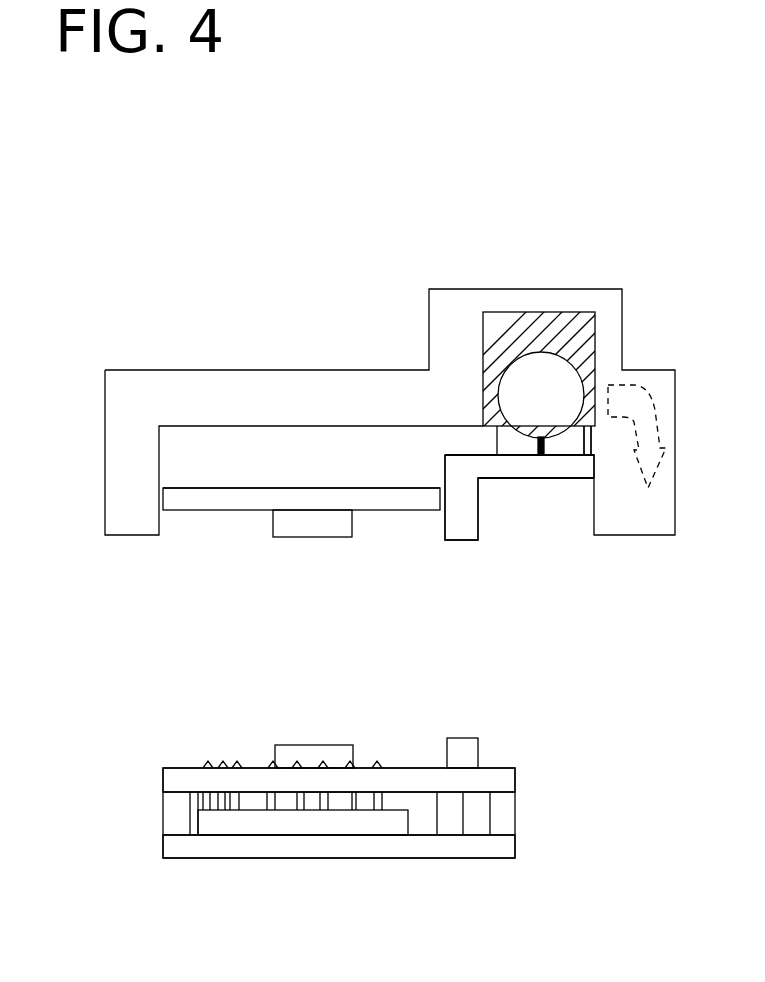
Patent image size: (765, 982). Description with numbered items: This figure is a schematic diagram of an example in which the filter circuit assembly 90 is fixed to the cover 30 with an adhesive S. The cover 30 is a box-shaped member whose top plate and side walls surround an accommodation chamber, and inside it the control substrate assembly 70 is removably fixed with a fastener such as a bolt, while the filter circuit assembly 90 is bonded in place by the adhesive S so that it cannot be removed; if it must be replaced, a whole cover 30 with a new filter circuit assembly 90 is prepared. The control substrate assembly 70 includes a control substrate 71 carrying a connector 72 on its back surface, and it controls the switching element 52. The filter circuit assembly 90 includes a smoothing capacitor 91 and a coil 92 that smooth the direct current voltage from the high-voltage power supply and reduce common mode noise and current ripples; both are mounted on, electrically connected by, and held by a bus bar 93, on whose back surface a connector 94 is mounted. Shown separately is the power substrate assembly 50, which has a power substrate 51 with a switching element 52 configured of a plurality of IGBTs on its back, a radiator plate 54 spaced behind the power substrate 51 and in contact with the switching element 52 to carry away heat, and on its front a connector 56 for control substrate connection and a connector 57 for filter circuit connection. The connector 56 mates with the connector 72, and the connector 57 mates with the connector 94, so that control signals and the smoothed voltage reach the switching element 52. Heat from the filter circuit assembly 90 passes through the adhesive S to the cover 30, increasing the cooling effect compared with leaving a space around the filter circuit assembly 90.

The cover 30 is at (278, 358).
The control substrate assembly 70 is at (208, 522).
The control substrate 71 is at (207, 488).
The connector 72 is at (292, 538).
The filter circuit assembly 90 is at (500, 492).
The smoothing capacitor 91 is at (566, 442).
The coil 92 is at (532, 423).
The bus bar 93 is at (470, 455).
The connector 94 is at (440, 527).
The adhesive S is at (532, 320).
The power substrate assembly 50 is at (301, 870).
The power substrate 51 is at (515, 778).
The switching element 52 is at (234, 828).
The radiator plate 54 is at (462, 860).
The connector 56 is at (332, 745).
The connector 57 is at (460, 738).